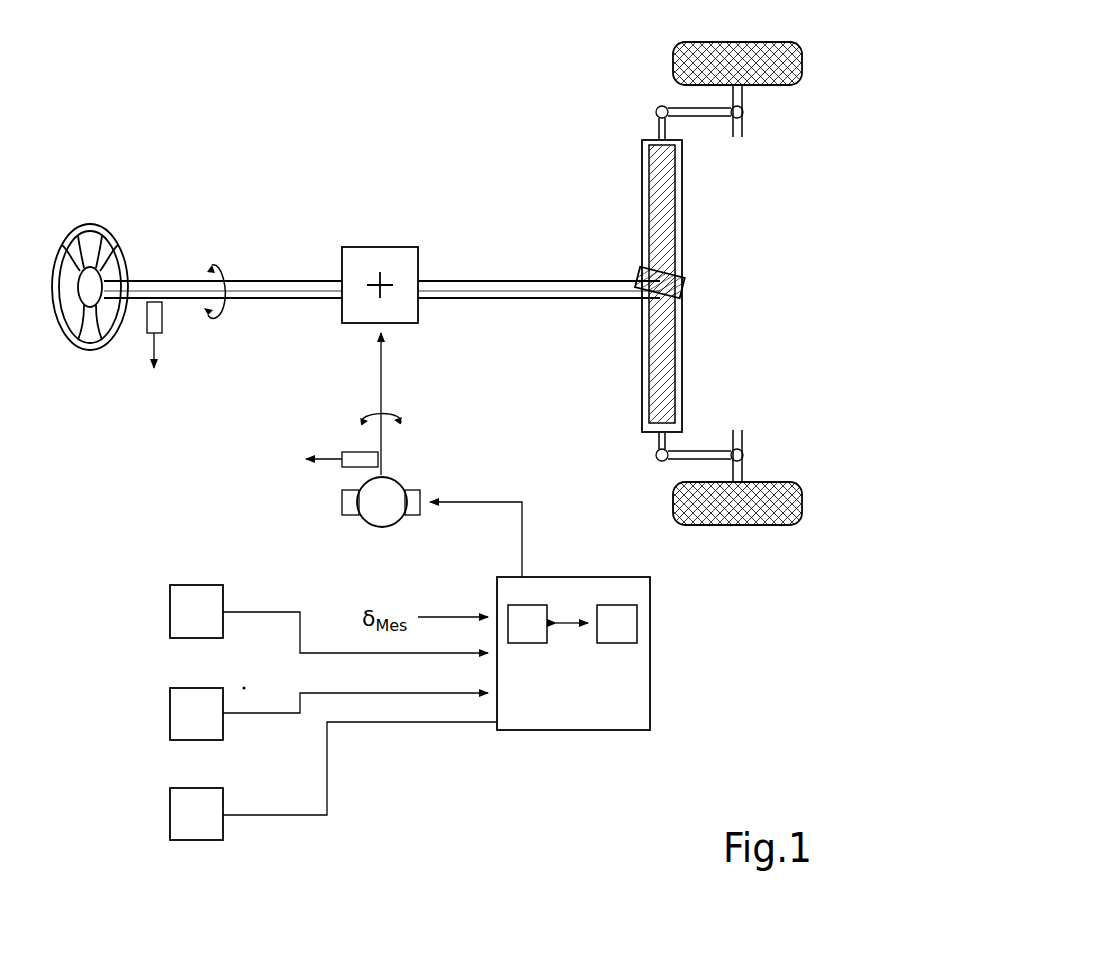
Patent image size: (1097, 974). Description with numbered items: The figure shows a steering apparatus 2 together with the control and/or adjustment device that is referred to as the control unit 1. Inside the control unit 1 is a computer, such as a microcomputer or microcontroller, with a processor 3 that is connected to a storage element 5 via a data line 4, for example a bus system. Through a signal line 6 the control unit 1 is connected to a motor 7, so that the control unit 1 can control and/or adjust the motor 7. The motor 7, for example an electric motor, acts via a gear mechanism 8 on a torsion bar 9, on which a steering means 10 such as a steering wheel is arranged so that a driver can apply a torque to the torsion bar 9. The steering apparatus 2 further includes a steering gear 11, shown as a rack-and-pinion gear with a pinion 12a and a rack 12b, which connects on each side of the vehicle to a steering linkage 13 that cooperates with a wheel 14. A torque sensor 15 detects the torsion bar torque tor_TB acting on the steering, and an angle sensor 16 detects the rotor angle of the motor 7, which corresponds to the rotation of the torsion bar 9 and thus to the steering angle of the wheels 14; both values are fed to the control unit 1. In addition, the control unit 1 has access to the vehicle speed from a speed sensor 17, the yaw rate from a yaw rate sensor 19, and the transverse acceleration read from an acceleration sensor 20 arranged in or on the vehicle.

The control unit 1 is at (652, 672).
The steering apparatus 2 is at (470, 150).
The processor 3 is at (637, 620).
The data line 4 is at (573, 622).
The storage element 5 is at (532, 645).
The signal line 6 is at (523, 525).
The motor 7 is at (375, 527).
The gear mechanism 8 is at (360, 260).
The torsion bar 9 is at (255, 283).
The steering means 10 is at (110, 230).
The steering gear 11 is at (612, 228).
The pinion 12a is at (632, 271).
The rack 12b is at (668, 363).
The steering linkage 13 is at (677, 107).
The wheel 14 is at (803, 63).
The torque sensor 15 is at (156, 320).
The angle sensor 16 is at (355, 457).
The speed sensor 17 is at (197, 585).
The yaw rate sensor 19 is at (170, 703).
The acceleration sensor 20 is at (170, 813).